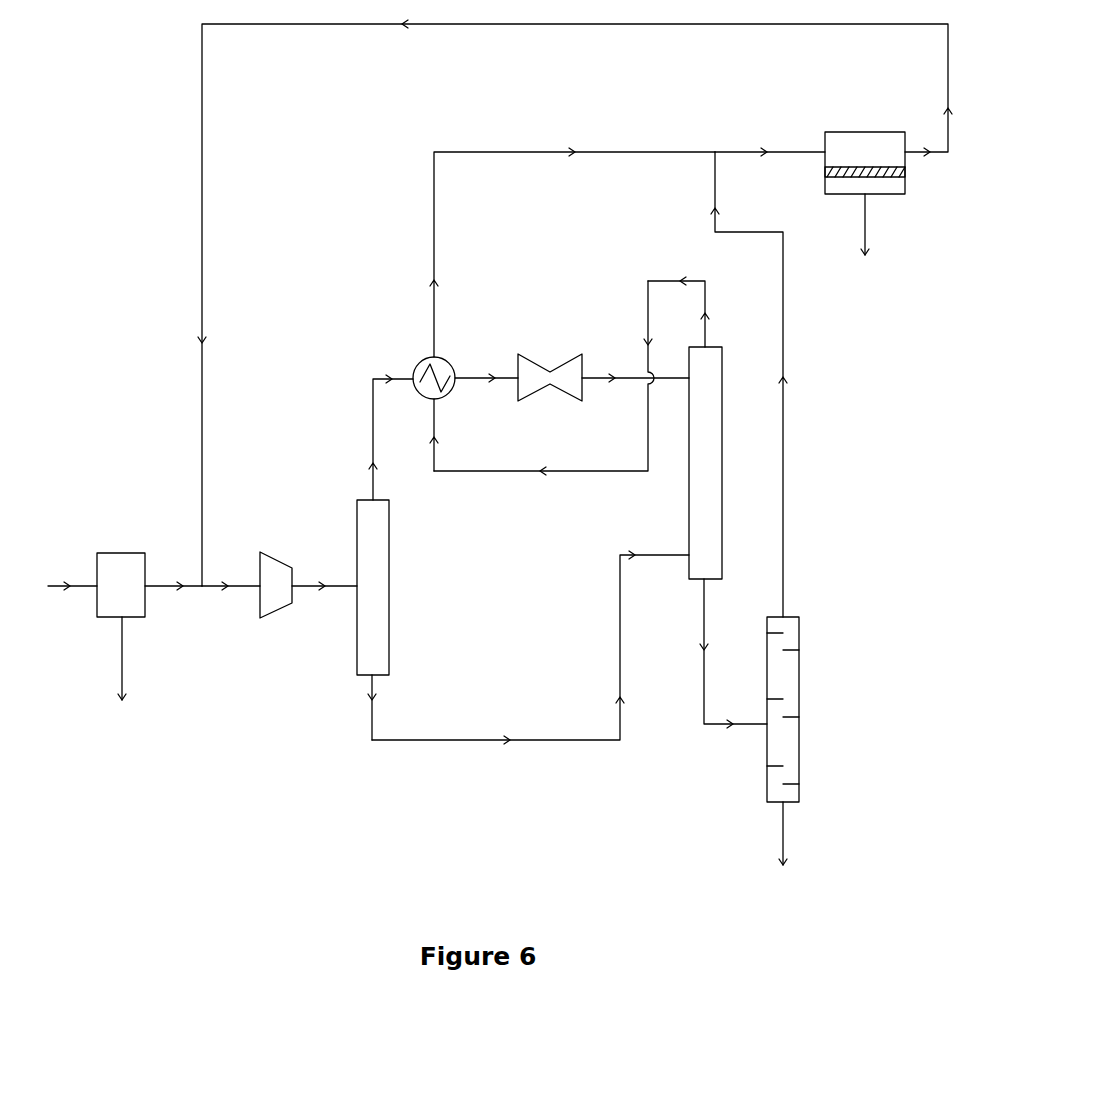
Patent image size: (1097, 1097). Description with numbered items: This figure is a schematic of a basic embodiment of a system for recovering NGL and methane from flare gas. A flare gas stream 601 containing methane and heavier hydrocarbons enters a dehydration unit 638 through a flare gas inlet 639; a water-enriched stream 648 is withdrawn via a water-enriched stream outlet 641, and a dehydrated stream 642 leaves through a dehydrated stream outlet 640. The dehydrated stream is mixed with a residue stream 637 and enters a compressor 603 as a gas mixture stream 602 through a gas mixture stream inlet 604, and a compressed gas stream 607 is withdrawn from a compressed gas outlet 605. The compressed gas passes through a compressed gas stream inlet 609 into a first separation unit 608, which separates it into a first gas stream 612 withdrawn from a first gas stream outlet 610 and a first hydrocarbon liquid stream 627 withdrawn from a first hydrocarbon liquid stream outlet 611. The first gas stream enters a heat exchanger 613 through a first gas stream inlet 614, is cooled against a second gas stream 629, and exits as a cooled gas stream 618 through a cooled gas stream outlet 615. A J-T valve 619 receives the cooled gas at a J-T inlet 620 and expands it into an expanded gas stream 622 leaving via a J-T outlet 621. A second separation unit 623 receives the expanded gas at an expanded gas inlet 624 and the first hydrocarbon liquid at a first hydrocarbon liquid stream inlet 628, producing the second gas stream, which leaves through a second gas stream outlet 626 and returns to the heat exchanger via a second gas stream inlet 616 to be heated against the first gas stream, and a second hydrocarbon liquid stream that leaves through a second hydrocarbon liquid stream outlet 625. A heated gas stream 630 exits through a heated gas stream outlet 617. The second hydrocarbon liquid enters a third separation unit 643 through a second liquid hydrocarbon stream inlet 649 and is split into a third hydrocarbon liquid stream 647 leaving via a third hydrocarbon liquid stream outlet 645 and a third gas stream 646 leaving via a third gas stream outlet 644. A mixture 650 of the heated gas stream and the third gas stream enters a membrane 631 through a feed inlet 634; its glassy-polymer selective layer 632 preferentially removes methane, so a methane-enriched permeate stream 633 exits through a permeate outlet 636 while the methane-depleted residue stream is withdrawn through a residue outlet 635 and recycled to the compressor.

The flare gas stream 601 is at (72, 576).
The gas mixture stream 602 is at (231, 576).
The compressor 603 is at (270, 618).
The gas mixture stream inlet 604 is at (258, 585).
The compressed gas outlet 605 is at (292, 590).
The compressed gas stream 607 is at (324, 576).
The first separation unit 608 is at (389, 545).
The compressed gas stream inlet 609 is at (357, 585).
The first gas stream outlet 610 is at (372, 498).
The first hydrocarbon liquid stream outlet 611 is at (372, 680).
The first gas stream 612 is at (388, 367).
The heat exchanger 613 is at (415, 368).
The first gas stream inlet 614 is at (420, 384).
The cooled gas stream outlet 615 is at (451, 376).
The second gas stream inlet 616 is at (443, 396).
The heated gas stream outlet 617 is at (421, 359).
The cooled gas stream 618 is at (486, 370).
The J-T valve 619 is at (530, 358).
The J-T inlet 620 is at (522, 390).
The J-T outlet 621 is at (583, 390).
The expanded gas stream 622 is at (635, 370).
The second separation unit 623 is at (689, 538).
The expanded gas inlet 624 is at (689, 370).
The second hydrocarbon liquid stream outlet 625 is at (706, 583).
The second gas stream outlet 626 is at (708, 345).
The first hydrocarbon liquid stream 627 is at (530, 657).
The first hydrocarbon liquid stream inlet 628 is at (689, 556).
The second gas stream 629 is at (544, 388).
The heated gas stream 630 is at (572, 244).
The membrane 631 is at (855, 132).
The selective layer 632 is at (825, 173).
The permeate stream 633 is at (865, 273).
The feed inlet 634 is at (825, 150).
The residue outlet 635 is at (905, 160).
The permeate outlet 636 is at (866, 206).
The residue stream 637 is at (305, 181).
The dehydration unit 638 is at (114, 553).
The flare gas inlet 639 is at (97, 590).
The dehydrated stream outlet 640 is at (145, 590).
The water-enriched stream outlet 641 is at (122, 618).
The dehydrated stream 642 is at (173, 576).
The third separation unit 643 is at (799, 672).
The third gas stream outlet 644 is at (786, 615).
The third hydrocarbon liquid stream outlet 645 is at (784, 804).
The third gas stream 646 is at (763, 384).
The third hydrocarbon liquid stream 647 is at (780, 846).
The water-enriched stream 648 is at (118, 670).
The second liquid hydrocarbon stream inlet 649 is at (767, 727).
The mixture 650 is at (770, 143).